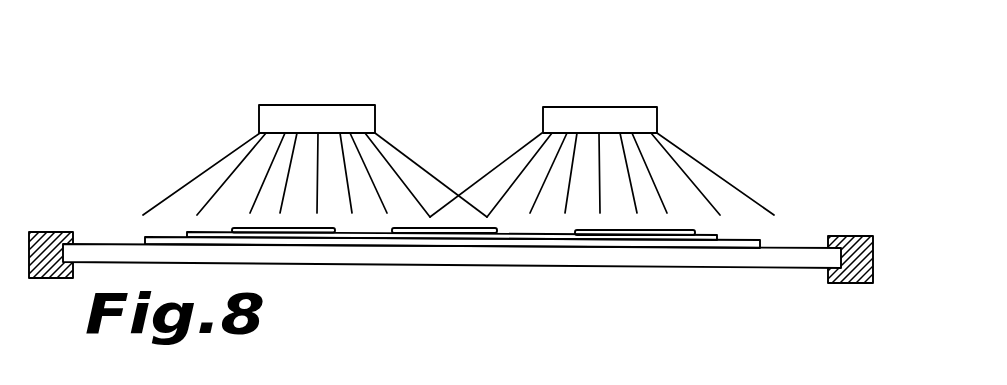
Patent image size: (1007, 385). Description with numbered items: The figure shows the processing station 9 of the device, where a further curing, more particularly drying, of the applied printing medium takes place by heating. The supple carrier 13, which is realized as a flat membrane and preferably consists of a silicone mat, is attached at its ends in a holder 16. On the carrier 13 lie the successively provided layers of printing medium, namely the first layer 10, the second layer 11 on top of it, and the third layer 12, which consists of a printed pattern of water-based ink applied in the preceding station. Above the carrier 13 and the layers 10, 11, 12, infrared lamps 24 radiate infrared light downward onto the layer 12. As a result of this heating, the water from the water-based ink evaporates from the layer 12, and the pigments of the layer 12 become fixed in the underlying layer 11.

The processing station 9 is at (664, 66).
The first layer 10 is at (752, 240).
The second layer 11 is at (717, 234).
The third layer 12 is at (245, 228).
The carrier 13 is at (609, 335).
The holder 16 is at (853, 238).
The infrared lamps 24 is at (311, 118).